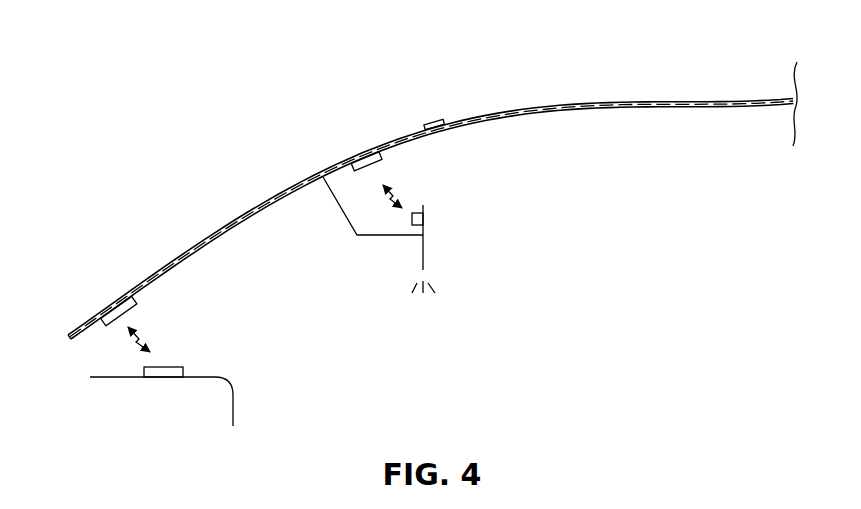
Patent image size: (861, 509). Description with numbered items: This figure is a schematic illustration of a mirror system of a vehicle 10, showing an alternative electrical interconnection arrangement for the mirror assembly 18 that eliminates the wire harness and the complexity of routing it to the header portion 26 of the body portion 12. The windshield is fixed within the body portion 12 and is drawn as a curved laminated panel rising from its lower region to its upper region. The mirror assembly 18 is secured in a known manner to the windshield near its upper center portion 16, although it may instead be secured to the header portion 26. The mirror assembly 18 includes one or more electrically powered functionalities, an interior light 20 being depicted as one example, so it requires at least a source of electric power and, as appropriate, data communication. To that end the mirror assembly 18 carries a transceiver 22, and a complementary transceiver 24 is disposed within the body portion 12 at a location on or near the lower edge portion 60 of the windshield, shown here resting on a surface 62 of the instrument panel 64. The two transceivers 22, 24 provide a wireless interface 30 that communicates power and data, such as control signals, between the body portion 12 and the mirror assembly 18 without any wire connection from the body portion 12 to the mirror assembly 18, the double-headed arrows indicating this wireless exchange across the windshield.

The vehicle 10 is at (757, 52).
The body portion 12 is at (593, 103).
The upper center portion 16 is at (393, 141).
The mirror assembly 18 is at (343, 225).
The interior light 20 is at (433, 287).
The transceiver 22 is at (410, 220).
The transceiver 24 is at (163, 377).
The header portion 26 is at (443, 138).
The wireless interface 30 is at (397, 197).
The lower edge portion 60 is at (80, 337).
The surface 62 is at (202, 377).
The instrument panel 64 is at (233, 403).